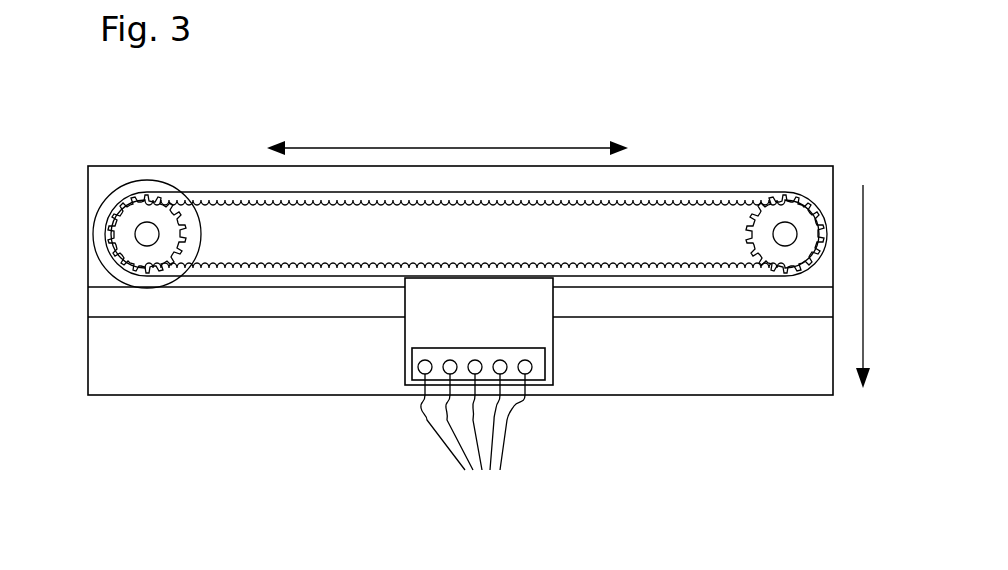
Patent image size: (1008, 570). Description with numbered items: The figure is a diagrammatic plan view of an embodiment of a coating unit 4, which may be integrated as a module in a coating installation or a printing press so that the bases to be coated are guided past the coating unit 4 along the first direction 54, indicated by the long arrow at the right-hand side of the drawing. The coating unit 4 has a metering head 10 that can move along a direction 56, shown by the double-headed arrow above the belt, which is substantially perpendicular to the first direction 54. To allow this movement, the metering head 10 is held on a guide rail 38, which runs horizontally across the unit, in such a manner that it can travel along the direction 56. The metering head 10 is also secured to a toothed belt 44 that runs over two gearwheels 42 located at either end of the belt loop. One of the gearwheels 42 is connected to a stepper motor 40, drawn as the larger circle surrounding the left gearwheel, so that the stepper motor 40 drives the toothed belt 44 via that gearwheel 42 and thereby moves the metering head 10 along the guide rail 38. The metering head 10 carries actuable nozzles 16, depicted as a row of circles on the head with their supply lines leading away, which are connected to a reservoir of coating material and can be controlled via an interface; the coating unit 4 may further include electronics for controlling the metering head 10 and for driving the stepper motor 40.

The coating unit 4 is at (166, 452).
The metering head 10 is at (408, 342).
The nozzles 16 is at (478, 425).
The guide rail 38 is at (675, 318).
The stepper motor 40 is at (102, 198).
The gearwheels 42 is at (145, 198).
The toothed belt 44 is at (688, 198).
The first direction 54 is at (866, 290).
The direction 56 is at (403, 147).